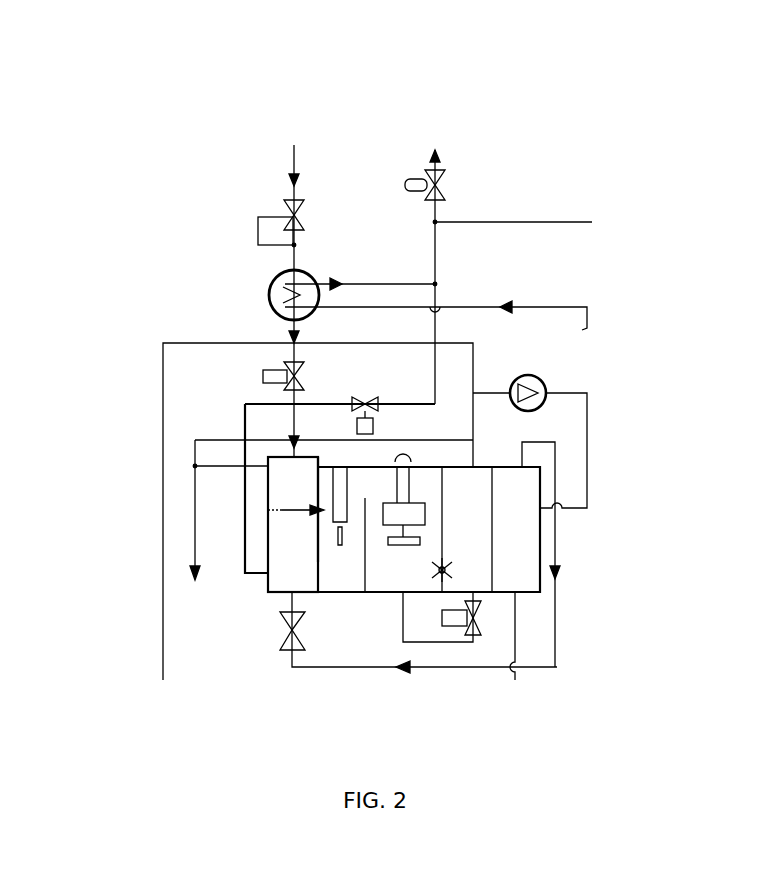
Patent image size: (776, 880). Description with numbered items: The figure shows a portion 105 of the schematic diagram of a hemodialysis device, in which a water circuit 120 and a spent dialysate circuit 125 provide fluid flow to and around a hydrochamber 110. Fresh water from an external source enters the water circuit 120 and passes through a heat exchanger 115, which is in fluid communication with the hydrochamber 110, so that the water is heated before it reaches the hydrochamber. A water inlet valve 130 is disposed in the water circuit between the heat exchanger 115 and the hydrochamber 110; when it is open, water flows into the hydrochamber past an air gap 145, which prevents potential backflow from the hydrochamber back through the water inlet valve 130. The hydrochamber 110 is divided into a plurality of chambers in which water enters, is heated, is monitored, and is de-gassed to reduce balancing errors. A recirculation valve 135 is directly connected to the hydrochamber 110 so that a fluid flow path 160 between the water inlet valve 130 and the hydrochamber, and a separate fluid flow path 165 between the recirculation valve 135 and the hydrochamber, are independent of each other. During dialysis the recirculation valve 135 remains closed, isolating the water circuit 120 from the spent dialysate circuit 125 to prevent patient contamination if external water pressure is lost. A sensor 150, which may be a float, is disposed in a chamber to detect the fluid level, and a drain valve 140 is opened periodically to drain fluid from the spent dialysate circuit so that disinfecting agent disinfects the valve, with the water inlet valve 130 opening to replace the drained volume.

The portion of the schematic diagram 105 is at (652, 90).
The hydrochamber 110 is at (283, 597).
The heat exchanger 115 is at (270, 305).
The water circuit 120 is at (205, 195).
The spent dialysate circuit 125 is at (535, 183).
The water inlet valve 130 is at (262, 374).
The recirculation valve 135 is at (372, 398).
The drain valve 140 is at (410, 184).
The air gap 145 is at (268, 466).
The sensor 150 is at (417, 503).
The fluid flow path 160 is at (293, 418).
The fluid flow path 165 is at (237, 498).